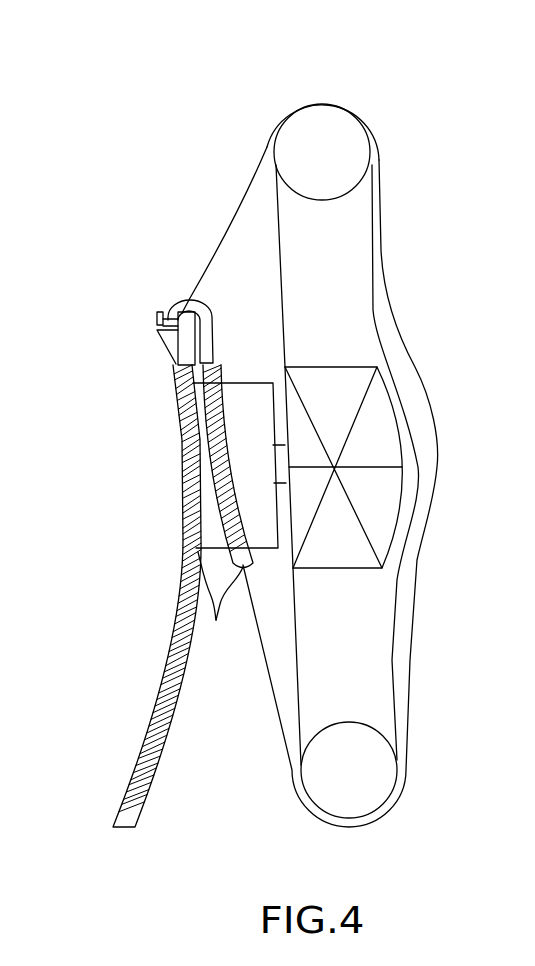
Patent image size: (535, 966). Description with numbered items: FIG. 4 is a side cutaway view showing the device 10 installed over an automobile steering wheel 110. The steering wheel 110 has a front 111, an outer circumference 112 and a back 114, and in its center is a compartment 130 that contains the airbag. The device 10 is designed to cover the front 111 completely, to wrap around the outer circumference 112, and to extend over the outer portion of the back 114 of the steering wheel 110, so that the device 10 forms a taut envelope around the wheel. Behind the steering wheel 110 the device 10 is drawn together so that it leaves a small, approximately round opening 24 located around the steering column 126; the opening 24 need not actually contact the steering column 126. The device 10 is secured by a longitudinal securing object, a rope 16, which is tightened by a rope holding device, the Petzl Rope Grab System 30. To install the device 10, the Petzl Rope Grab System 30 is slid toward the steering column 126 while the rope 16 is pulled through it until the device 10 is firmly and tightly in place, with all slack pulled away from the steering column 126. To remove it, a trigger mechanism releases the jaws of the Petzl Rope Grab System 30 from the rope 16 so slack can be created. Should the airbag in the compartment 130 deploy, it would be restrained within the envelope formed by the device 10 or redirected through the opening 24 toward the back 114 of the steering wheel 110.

The device 10 is at (240, 425).
The rope 16 is at (225, 508).
The opening 24 is at (187, 452).
The Petzl Rope Grab System 30 is at (172, 303).
The steering wheel 110 is at (349, 278).
The front of the steering wheel 111 is at (370, 150).
The outer circumference of the steering wheel 112 is at (333, 99).
The back of the steering wheel 114 is at (264, 148).
The steering column 126 is at (173, 397).
The compartment 130 is at (392, 460).